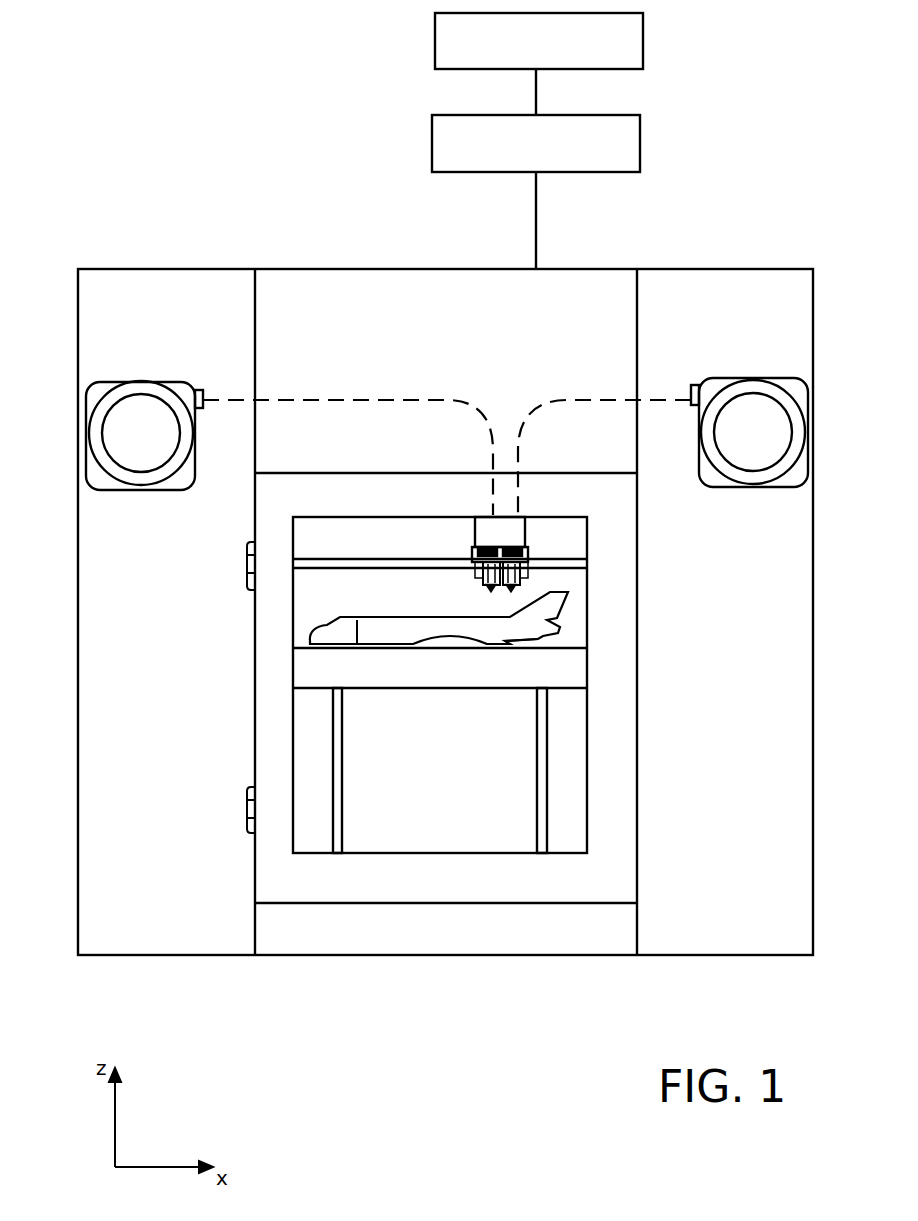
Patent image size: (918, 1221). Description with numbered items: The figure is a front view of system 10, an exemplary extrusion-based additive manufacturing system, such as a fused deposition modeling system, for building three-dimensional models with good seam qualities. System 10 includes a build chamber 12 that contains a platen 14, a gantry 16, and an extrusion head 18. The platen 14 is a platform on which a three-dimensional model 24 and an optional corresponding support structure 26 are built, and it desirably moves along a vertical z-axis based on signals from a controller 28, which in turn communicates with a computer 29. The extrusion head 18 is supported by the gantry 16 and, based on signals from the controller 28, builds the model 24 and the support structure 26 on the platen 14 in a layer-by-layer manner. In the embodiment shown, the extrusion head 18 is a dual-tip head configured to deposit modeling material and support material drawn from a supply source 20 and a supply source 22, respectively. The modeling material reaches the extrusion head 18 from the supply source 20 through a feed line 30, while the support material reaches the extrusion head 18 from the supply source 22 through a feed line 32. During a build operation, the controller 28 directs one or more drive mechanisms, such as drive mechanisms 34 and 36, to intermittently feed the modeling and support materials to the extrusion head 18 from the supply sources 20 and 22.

The system 10 is at (283, 232).
The build chamber 12 is at (409, 862).
The platen 14 is at (580, 680).
The gantry 16 is at (357, 567).
The extrusion head 18 is at (560, 540).
The supply source 20 is at (725, 378).
The supply source 22 is at (110, 382).
The 3D model 24 is at (333, 627).
The support structure 26 is at (562, 638).
The controller 28 is at (640, 127).
The computer 29 is at (643, 25).
The feed line 30 is at (573, 400).
The feed line 32 is at (315, 400).
The drive mechanism 34 is at (524, 556).
The drive mechanism 36 is at (476, 556).